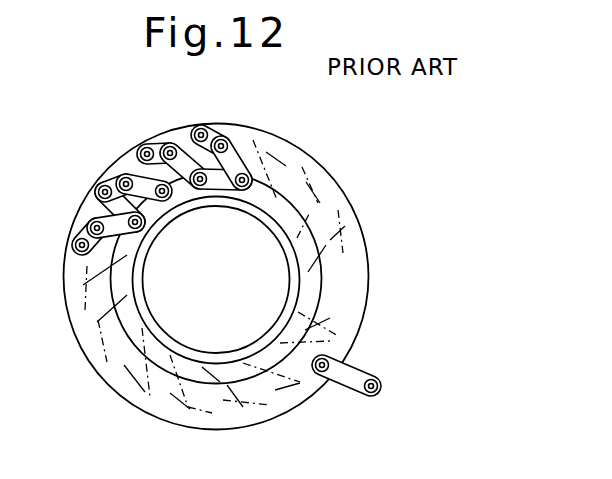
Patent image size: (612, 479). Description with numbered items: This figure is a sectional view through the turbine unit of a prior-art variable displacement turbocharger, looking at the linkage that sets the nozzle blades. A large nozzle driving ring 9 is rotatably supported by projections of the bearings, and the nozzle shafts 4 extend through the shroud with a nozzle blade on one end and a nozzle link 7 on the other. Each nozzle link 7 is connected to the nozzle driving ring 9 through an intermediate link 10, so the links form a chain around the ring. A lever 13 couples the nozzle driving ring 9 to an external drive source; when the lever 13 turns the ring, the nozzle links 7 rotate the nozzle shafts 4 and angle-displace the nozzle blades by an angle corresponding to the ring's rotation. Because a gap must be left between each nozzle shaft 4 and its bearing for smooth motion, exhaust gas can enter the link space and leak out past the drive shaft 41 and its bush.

The nozzle shaft 4 is at (116, 209).
The nozzle link 7 is at (238, 163).
The nozzle driving ring 9 is at (341, 182).
The intermediate link 10 is at (110, 183).
The lever 13 is at (353, 373).
The drive shaft 41 is at (323, 356).